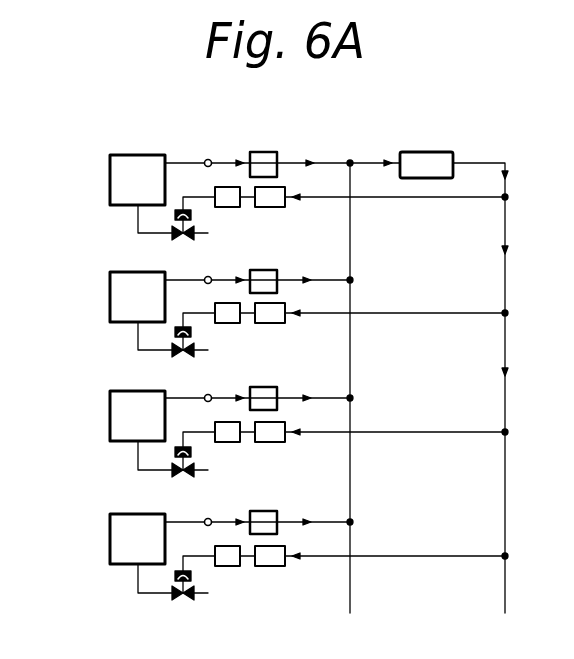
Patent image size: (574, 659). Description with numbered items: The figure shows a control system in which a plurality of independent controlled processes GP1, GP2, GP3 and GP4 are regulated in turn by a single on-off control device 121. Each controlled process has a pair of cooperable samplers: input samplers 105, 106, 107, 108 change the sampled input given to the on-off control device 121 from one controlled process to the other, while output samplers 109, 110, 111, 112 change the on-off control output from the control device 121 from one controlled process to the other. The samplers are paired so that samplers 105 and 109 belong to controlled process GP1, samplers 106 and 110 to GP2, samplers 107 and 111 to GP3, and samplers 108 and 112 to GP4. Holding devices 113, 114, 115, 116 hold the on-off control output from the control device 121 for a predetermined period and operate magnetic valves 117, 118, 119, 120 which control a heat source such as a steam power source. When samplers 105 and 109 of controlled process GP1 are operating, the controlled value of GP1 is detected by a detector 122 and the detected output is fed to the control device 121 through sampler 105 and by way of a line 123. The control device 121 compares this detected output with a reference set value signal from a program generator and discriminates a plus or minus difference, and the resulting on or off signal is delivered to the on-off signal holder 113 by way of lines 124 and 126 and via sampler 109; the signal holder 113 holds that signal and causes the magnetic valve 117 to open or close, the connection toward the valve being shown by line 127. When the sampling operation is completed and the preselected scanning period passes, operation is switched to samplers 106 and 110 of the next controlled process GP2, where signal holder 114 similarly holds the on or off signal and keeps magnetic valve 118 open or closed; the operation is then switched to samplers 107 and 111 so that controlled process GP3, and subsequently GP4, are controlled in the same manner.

The controlled process GP1 is at (110, 177).
The controlled process GP2 is at (110, 305).
The controlled process GP3 is at (110, 423).
The controlled process GP4 is at (110, 543).
The sampler 105 is at (263, 151).
The sampler 106 is at (280, 271).
The sampler 107 is at (280, 389).
The sampler 108 is at (280, 513).
The sampler 109 is at (276, 207).
The sampler 110 is at (272, 324).
The sampler 111 is at (271, 443).
The sampler 112 is at (270, 567).
The on-off signal holder 113 is at (228, 207).
The signal holder 114 is at (230, 324).
The holding device 115 is at (228, 443).
The holding device 116 is at (228, 567).
The magnetic valve 117 is at (186, 241).
The magnetic valve 118 is at (186, 358).
The magnetic valve 119 is at (186, 478).
The magnetic valve 120 is at (186, 601).
The on-off control device 121 is at (423, 152).
The detector 122 is at (205, 159).
The line 123 is at (320, 161).
The line 124 is at (480, 162).
The line 126 is at (248, 199).
The control line from block 113 to valve 117 127 is at (197, 196).